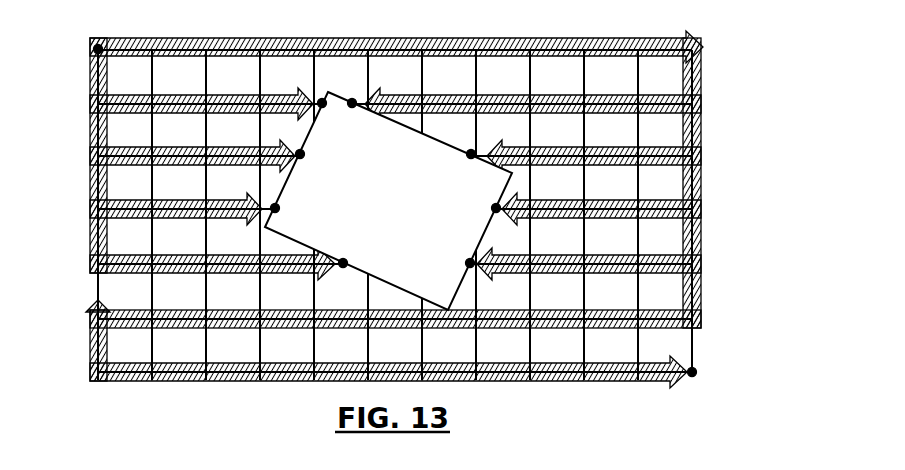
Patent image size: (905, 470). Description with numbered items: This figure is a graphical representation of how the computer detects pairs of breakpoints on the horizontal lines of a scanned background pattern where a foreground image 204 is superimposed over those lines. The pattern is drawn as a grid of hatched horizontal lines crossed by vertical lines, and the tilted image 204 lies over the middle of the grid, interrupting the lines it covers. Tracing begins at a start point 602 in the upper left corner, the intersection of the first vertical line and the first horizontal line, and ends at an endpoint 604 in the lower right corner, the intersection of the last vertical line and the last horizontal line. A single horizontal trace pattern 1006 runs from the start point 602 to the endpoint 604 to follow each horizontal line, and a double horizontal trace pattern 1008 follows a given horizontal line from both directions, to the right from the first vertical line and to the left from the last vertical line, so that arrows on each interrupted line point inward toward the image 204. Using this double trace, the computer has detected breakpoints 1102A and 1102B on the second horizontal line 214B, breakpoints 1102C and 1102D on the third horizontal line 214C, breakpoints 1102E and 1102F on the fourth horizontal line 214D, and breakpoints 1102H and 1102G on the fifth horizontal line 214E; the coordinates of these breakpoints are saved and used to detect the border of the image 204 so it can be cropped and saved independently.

The image 204 is at (423, 128).
The second horizontal line 214B is at (663, 95).
The third horizontal line 214C is at (677, 165).
The fourth horizontal line 214D is at (670, 216).
The fifth horizontal line 214E is at (670, 271).
The start point 602 is at (98, 49).
The endpoint 604 is at (692, 372).
The single horizontal trace pattern 1006 is at (90, 352).
The double horizontal trace pattern 1008 is at (128, 115).
The breakpoint 1102A is at (352, 103).
The breakpoint 1102B is at (322, 103).
The breakpoint 1102C is at (471, 154).
The breakpoint 1102D is at (300, 154).
The breakpoint 1102E is at (496, 208).
The breakpoint 1102F is at (275, 208).
The breakpoint 1102G is at (470, 263).
The breakpoint 1102H is at (343, 263).